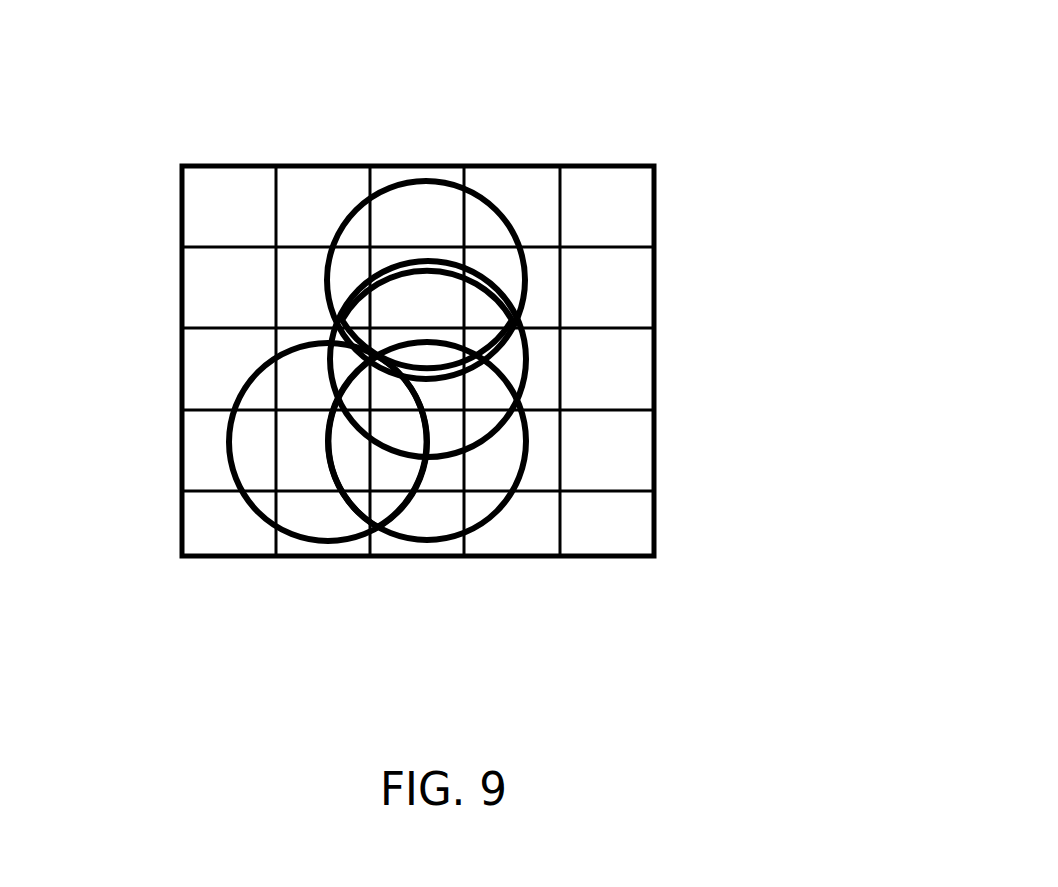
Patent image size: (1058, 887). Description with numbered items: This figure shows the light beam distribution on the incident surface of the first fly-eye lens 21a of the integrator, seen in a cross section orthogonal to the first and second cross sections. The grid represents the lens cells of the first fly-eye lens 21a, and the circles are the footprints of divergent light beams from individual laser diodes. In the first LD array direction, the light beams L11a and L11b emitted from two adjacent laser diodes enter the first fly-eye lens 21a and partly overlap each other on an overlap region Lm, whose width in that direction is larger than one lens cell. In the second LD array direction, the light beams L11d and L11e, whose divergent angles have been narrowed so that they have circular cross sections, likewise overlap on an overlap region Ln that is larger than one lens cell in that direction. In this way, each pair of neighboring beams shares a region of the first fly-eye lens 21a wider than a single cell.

The first fly-eye lens 21a is at (655, 165).
The light beam L11a is at (458, 230).
The light beam L11b is at (507, 358).
The light beam L11d is at (298, 492).
The light beam L11e is at (492, 470).
The overlap region Lm is at (442, 330).
The overlap region Ln is at (362, 475).